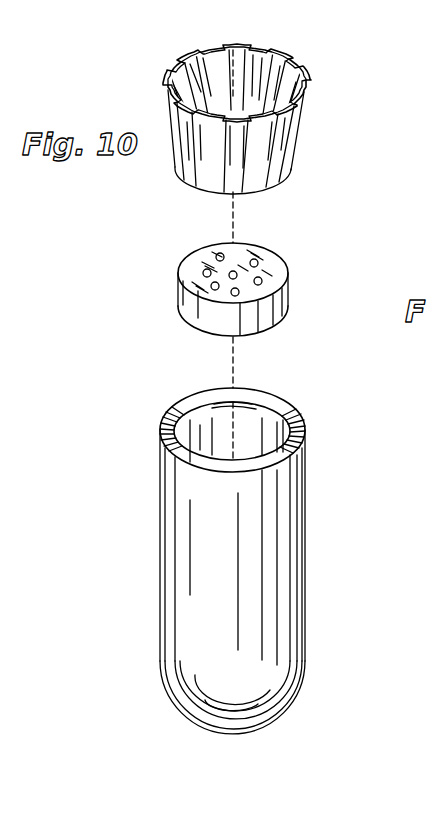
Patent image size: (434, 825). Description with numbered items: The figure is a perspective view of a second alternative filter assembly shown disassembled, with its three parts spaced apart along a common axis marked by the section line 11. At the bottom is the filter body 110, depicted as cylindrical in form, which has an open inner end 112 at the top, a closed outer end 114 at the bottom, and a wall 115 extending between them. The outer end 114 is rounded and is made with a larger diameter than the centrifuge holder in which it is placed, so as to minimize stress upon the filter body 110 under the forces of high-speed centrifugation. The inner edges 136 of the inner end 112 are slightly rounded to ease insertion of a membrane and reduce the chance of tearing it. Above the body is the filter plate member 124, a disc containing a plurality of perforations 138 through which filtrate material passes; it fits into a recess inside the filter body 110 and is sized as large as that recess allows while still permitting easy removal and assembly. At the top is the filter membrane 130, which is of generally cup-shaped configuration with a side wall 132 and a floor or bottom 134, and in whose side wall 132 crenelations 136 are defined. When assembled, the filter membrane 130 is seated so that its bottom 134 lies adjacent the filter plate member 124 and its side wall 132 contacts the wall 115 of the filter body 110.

The section line 11 is at (200, 12).
The filter body 110 is at (234, 569).
The open inner end 112 is at (190, 428).
The closed outer end 114 is at (270, 722).
The wall 115 is at (168, 612).
The filter plate member 124 is at (233, 289).
The filter membrane 130 is at (292, 68).
The side wall 132 is at (298, 127).
The bottom 134 is at (258, 188).
The crenelations 136 is at (293, 418).
The perforations 138 is at (216, 257).